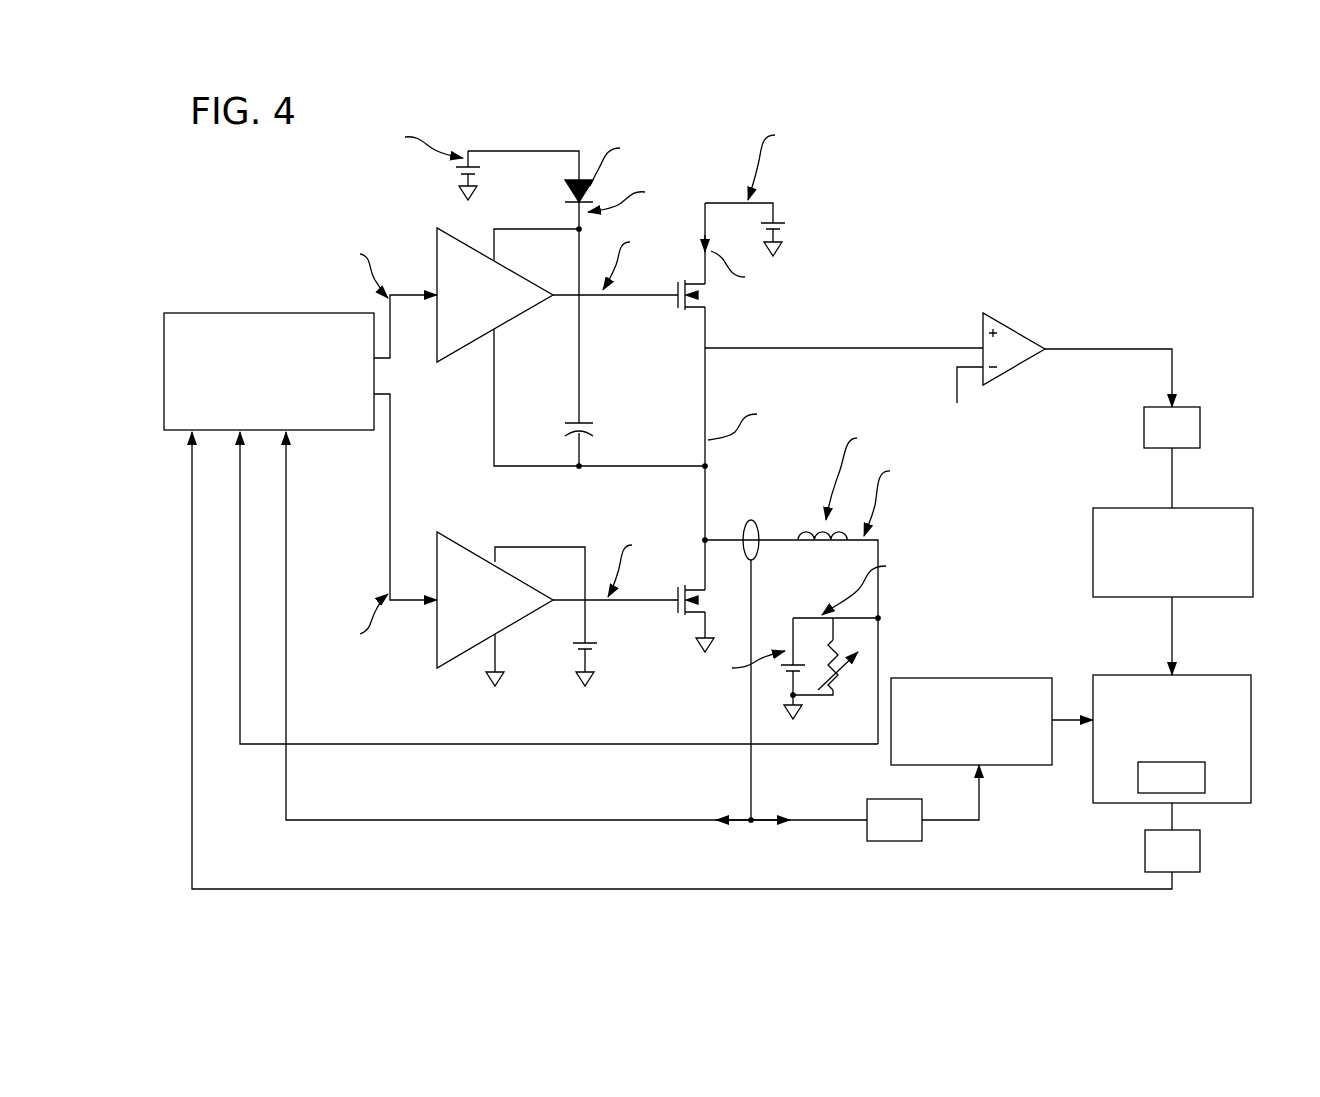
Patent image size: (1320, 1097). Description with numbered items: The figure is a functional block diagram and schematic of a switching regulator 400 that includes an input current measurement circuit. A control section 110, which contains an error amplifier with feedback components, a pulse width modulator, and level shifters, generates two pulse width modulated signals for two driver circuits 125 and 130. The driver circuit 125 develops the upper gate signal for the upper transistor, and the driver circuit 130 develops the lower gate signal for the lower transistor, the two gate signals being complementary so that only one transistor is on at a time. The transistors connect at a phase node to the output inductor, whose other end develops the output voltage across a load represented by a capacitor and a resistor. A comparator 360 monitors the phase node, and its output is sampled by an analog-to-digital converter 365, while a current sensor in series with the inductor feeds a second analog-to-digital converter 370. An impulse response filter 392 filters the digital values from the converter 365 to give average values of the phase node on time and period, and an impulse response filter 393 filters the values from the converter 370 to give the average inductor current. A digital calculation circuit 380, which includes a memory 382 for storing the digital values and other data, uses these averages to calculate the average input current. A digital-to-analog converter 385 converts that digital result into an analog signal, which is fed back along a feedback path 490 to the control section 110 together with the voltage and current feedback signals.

The switching regulator 400 is at (304, 212).
The control section 110 is at (267, 313).
The driver circuit 125 is at (437, 244).
The driver circuit 130 is at (437, 645).
The comparator 360 is at (1020, 324).
The analog-to-digital converter 365 is at (1190, 407).
The impulse response filter 392 is at (1206, 508).
The impulse response filter 393 is at (962, 678).
The digital calculation circuit 380 is at (1206, 675).
The memory 382 is at (1205, 777).
The digital-to-analog converter 385 is at (1145, 851).
The analog-to-digital converter 370 is at (867, 810).
The feedback line 490 is at (735, 889).